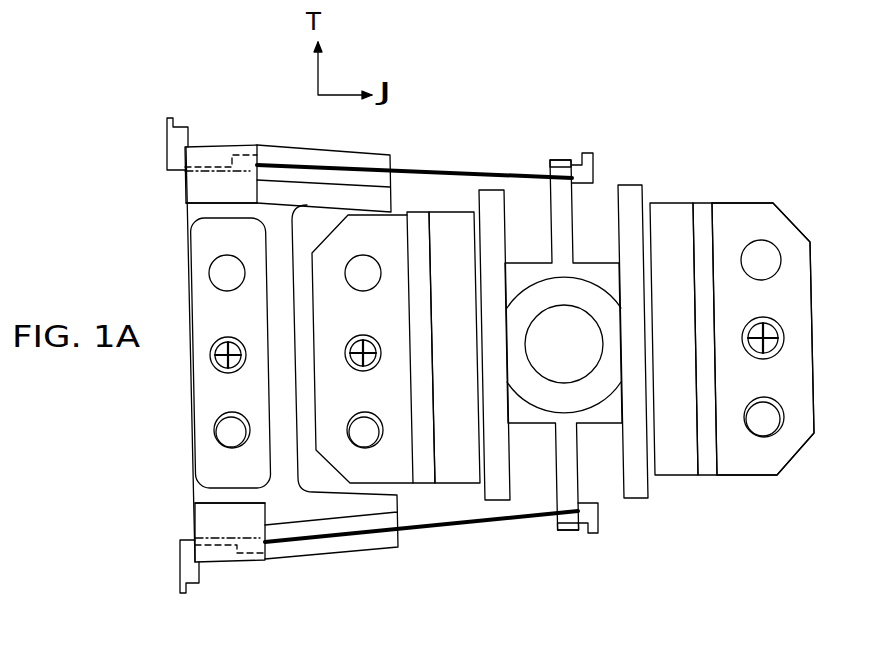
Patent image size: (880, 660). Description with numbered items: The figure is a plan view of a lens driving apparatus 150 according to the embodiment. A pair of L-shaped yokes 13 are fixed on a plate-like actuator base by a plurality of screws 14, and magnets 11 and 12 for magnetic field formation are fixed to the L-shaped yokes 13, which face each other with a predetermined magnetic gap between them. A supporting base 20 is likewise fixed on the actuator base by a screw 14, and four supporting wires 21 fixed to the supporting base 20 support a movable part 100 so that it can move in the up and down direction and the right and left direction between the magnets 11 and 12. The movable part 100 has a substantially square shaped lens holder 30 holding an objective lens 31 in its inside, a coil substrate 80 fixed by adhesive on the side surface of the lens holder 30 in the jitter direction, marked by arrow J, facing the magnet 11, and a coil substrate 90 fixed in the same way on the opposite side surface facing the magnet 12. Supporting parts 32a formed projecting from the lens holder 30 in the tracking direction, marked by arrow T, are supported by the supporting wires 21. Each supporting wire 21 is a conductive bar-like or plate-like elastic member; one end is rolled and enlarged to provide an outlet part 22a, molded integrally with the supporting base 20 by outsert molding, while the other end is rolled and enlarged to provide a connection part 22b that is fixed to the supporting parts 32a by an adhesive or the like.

The magnet 11 is at (678, 477).
The magnet 12 is at (466, 485).
The L-shaped yoke 13 is at (426, 487).
The screw 14 is at (213, 365).
The supporting base 20 is at (220, 153).
The supporting wire 21 is at (402, 168).
The outlet part 22a is at (172, 118).
The connection part 22b is at (596, 152).
The lens holder 30 is at (612, 276).
The objective lens 31 is at (568, 350).
The supporting part 32a is at (557, 160).
The coil substrate 80 is at (632, 185).
The coil substrate 90 is at (490, 190).
The movable part 100 is at (620, 88).
The lens driving apparatus 150 is at (433, 88).